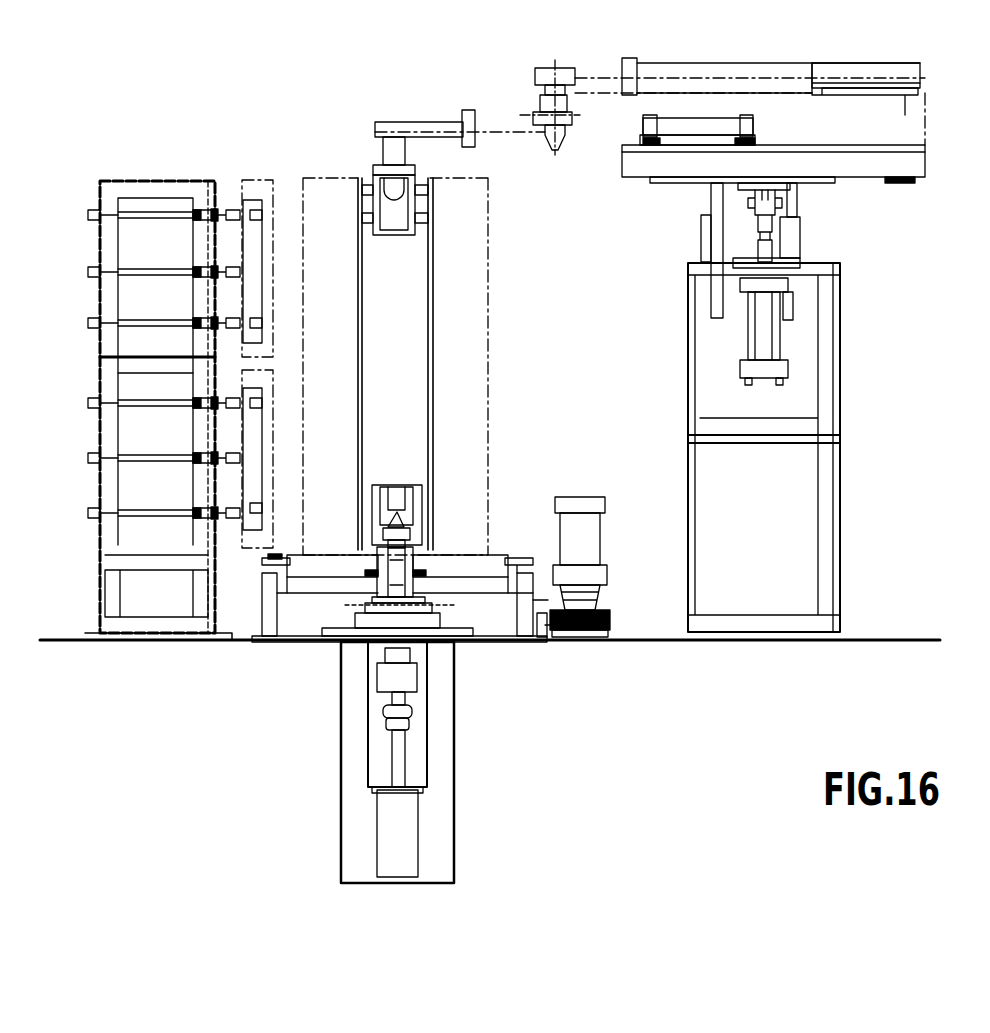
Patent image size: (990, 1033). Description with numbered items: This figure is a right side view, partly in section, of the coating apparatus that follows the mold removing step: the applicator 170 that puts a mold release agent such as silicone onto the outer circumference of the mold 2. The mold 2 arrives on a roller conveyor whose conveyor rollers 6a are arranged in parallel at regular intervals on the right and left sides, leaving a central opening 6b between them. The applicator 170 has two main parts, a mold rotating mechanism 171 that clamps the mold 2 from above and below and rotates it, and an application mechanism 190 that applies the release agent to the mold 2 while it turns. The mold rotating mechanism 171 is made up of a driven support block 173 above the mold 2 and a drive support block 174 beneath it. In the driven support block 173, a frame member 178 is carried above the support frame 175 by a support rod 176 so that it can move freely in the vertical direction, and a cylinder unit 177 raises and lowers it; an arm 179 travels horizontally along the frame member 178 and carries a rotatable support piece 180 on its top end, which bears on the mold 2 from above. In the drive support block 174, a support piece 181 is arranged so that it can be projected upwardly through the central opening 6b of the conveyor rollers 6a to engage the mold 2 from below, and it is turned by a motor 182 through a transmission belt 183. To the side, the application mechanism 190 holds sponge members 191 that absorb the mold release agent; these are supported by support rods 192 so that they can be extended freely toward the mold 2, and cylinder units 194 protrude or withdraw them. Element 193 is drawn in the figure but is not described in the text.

The mold 2 is at (478, 320).
The conveyor rollers 6a is at (307, 563).
The central opening 6b is at (407, 545).
The applicator 170 is at (727, 58).
The mold rotating mechanism 171 is at (810, 221).
The driven support block 173 is at (594, 152).
The drive support block 174 is at (465, 532).
The support frame 175 is at (828, 484).
The support rod 176 is at (716, 305).
The cylinder unit 177 is at (770, 348).
The frame member 178 is at (895, 158).
The arm 179 is at (592, 130).
The rotatable support piece 180 is at (405, 192).
The support piece 181 is at (398, 518).
The motor 182 is at (590, 535).
The transmission belt 183 is at (497, 612).
The application mechanism 190 is at (220, 150).
The sponge members 191 is at (268, 192).
The support rods 192 is at (108, 345).
The bolts 193 is at (100, 272).
The cylinder units 194 is at (145, 268).